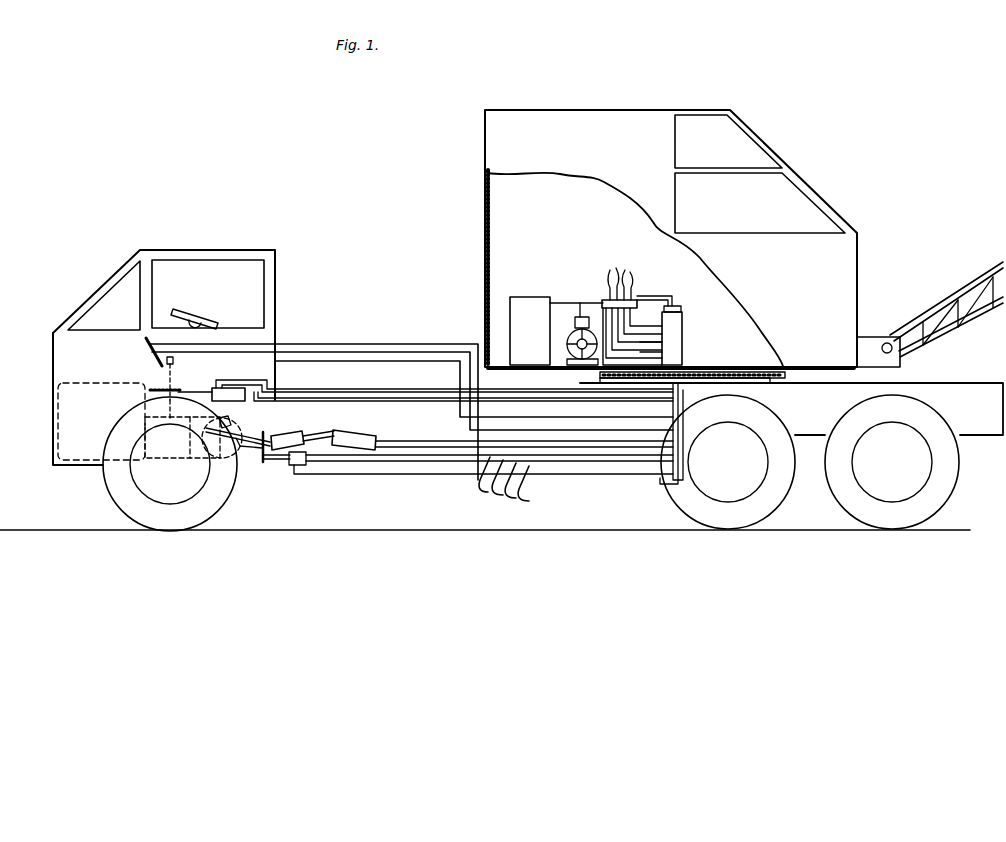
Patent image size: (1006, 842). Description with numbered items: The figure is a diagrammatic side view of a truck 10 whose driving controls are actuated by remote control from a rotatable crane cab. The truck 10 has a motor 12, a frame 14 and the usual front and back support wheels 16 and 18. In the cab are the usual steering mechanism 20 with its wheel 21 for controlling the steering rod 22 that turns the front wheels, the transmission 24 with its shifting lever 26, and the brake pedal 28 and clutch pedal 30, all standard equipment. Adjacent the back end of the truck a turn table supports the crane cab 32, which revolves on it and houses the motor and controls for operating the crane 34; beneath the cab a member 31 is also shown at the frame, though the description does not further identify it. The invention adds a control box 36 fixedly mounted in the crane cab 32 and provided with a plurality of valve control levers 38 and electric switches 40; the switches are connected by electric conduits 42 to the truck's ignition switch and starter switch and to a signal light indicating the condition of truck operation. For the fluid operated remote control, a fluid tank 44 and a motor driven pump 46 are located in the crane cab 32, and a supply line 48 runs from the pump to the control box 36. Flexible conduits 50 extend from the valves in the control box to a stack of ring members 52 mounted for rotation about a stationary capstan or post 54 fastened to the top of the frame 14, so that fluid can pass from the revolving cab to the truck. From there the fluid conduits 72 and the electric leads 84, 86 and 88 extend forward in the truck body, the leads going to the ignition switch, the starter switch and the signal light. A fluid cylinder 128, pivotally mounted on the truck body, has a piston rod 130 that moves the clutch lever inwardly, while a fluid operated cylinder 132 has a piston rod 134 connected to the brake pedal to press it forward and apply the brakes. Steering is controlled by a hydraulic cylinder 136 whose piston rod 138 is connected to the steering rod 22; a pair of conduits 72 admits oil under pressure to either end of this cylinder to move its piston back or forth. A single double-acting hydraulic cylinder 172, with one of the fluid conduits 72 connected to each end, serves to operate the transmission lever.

The truck 10 is at (241, 250).
The motor 12 is at (99, 378).
The frame 14 is at (921, 397).
The front support wheels 16 is at (166, 522).
The back support wheels 18 is at (875, 515).
The steering mechanism 20 is at (188, 312).
The wheel 21 is at (211, 322).
The steering rod 22 is at (259, 454).
The transmission 24 is at (164, 458).
The shifting lever 26 is at (175, 373).
The brake pedal 28 is at (214, 417).
The clutch pedal 30 is at (241, 413).
The subframe 31 is at (770, 366).
The crane cab 32 is at (582, 132).
The crane 34 is at (968, 282).
The control box 36 is at (640, 301).
The valve control levers 38 is at (617, 283).
The electric switches 40 is at (603, 302).
The electric conduits 42 is at (663, 299).
The fluid tank 44 is at (522, 298).
The motor driven pump 46 is at (566, 341).
The supply line 48 is at (560, 302).
The flexible conduits 50 is at (657, 352).
The ring members 52 is at (684, 352).
The capstan or post 54 is at (688, 386).
The fluid conduits 72 is at (357, 400).
The electric lead 84 is at (334, 361).
The electric lead 86 is at (373, 352).
The electric lead 88 is at (432, 340).
The fluid cylinder 128 is at (282, 436).
The piston rod 130 is at (235, 448).
The fluid operated cylinder 132 is at (355, 434).
The piston rod 134 is at (286, 433).
The hydraulic cylinder 136 is at (300, 474).
The piston rod 138 is at (265, 463).
The hydraulic cylinder 172 is at (225, 393).